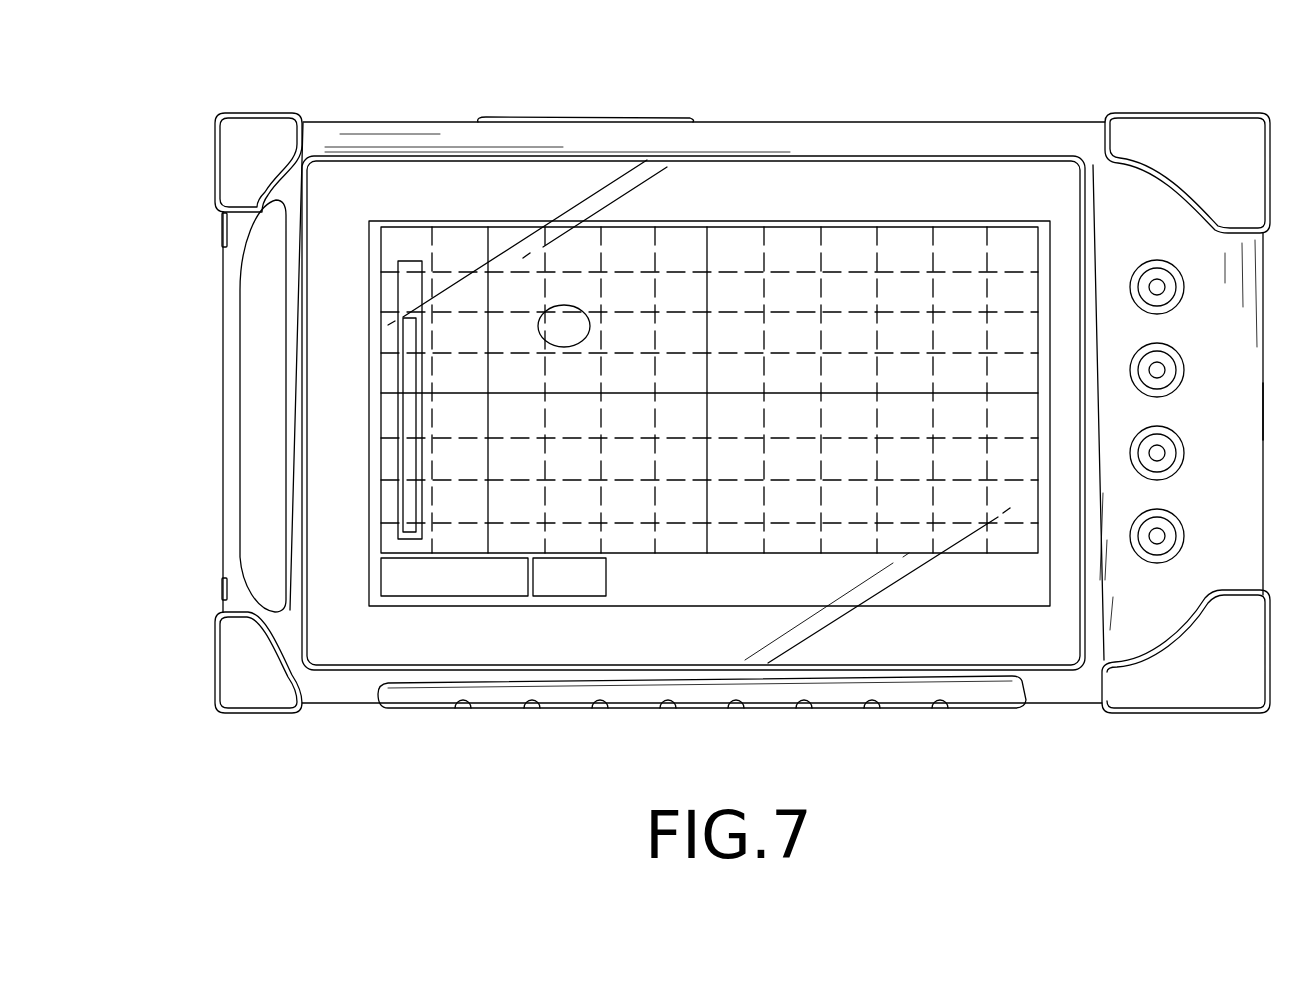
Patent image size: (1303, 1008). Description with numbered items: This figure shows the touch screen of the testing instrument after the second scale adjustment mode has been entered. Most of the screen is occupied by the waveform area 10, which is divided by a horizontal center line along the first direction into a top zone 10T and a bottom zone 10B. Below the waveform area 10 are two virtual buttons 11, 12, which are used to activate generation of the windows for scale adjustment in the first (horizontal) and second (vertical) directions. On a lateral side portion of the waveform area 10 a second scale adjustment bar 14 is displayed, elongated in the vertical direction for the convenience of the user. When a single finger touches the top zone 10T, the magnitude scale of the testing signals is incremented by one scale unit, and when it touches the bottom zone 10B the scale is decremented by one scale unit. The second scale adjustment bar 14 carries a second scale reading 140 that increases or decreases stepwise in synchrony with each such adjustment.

The waveform area 10 is at (858, 226).
The top zone 10T is at (630, 248).
The bottom zone 10B is at (678, 510).
The virtual button 11 is at (578, 583).
The virtual button 12 is at (432, 588).
The second scale adjustment bar 14 is at (397, 298).
The second scale reading 140 is at (403, 463).